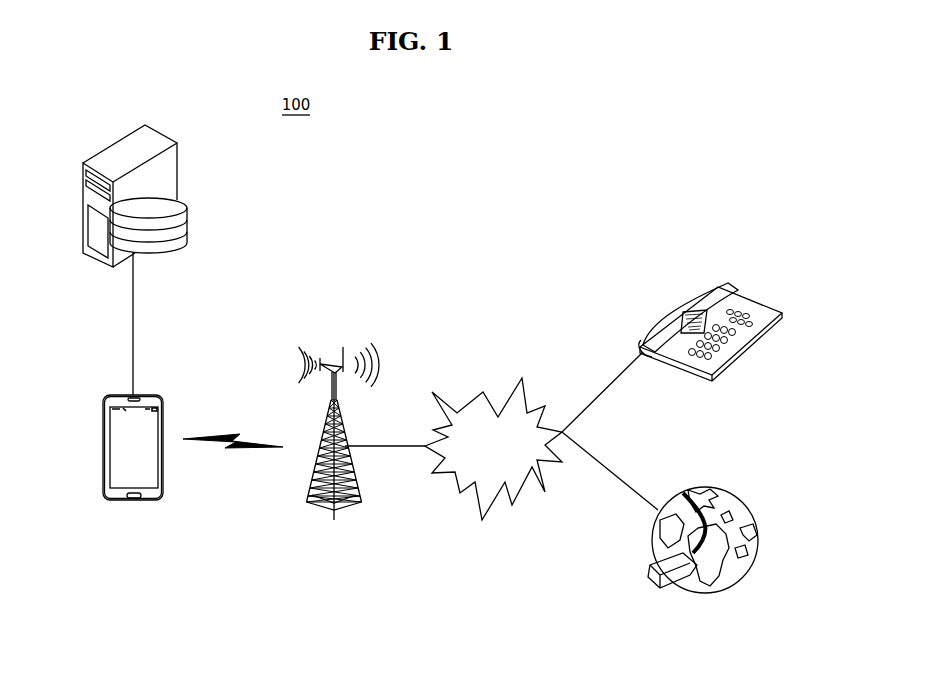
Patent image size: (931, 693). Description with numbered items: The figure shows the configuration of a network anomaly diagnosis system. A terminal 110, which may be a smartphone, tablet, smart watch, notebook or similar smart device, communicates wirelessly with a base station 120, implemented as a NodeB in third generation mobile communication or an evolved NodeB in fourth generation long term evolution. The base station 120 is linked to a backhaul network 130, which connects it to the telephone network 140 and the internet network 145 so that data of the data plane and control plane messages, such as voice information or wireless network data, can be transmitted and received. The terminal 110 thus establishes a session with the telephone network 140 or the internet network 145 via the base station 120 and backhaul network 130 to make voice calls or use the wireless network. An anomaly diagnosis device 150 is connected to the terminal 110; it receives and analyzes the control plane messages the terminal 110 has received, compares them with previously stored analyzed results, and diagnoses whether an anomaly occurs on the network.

The terminal 110 is at (134, 502).
The base station 120 is at (378, 358).
The backhaul network 130 is at (508, 398).
The telephone network 140 is at (692, 296).
The internet network 145 is at (710, 594).
The anomaly diagnosis device 150 is at (115, 145).